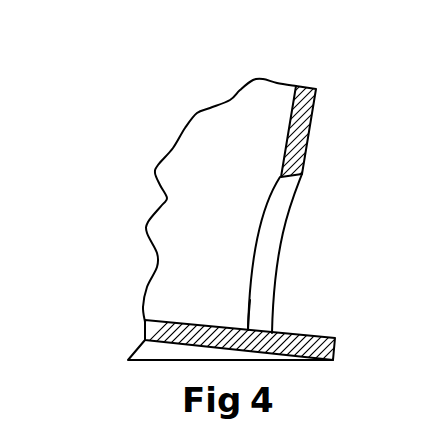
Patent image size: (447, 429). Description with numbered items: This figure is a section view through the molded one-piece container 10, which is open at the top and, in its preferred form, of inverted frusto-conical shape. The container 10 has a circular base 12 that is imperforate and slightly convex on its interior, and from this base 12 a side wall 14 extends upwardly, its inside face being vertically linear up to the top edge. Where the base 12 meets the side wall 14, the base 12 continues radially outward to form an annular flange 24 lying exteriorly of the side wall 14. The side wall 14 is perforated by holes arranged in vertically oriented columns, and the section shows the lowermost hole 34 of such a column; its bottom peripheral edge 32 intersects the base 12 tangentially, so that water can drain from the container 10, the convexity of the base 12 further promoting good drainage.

The container 10 is at (212, 79).
The base 12 is at (142, 327).
The side wall 14 is at (312, 115).
The annular flange 24 is at (325, 334).
The bottom peripheral edge 32 is at (253, 329).
The lowermost hole 34 is at (282, 202).